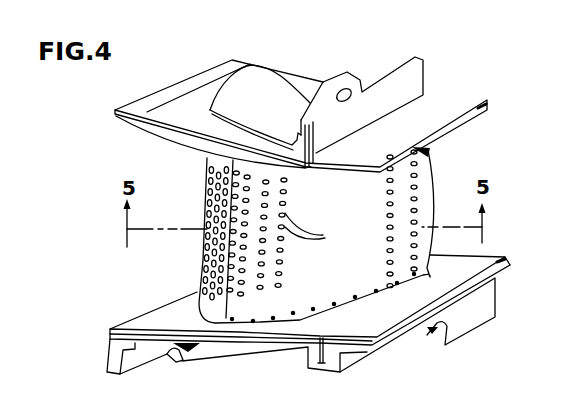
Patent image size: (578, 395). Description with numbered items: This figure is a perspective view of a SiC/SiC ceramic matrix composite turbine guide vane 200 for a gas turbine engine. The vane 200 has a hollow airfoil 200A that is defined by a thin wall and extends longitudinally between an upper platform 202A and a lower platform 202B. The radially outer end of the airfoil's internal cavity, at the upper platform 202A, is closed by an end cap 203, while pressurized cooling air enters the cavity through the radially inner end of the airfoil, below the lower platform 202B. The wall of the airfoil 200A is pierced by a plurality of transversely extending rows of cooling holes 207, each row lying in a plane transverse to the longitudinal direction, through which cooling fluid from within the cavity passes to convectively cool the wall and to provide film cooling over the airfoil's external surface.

The turbine guide vane 200 is at (270, 212).
The hollow airfoil 200A is at (446, 166).
The platform 202A is at (133, 132).
The platform 202B is at (143, 320).
The end cap 203 is at (217, 103).
The cooling holes 207 is at (325, 238).